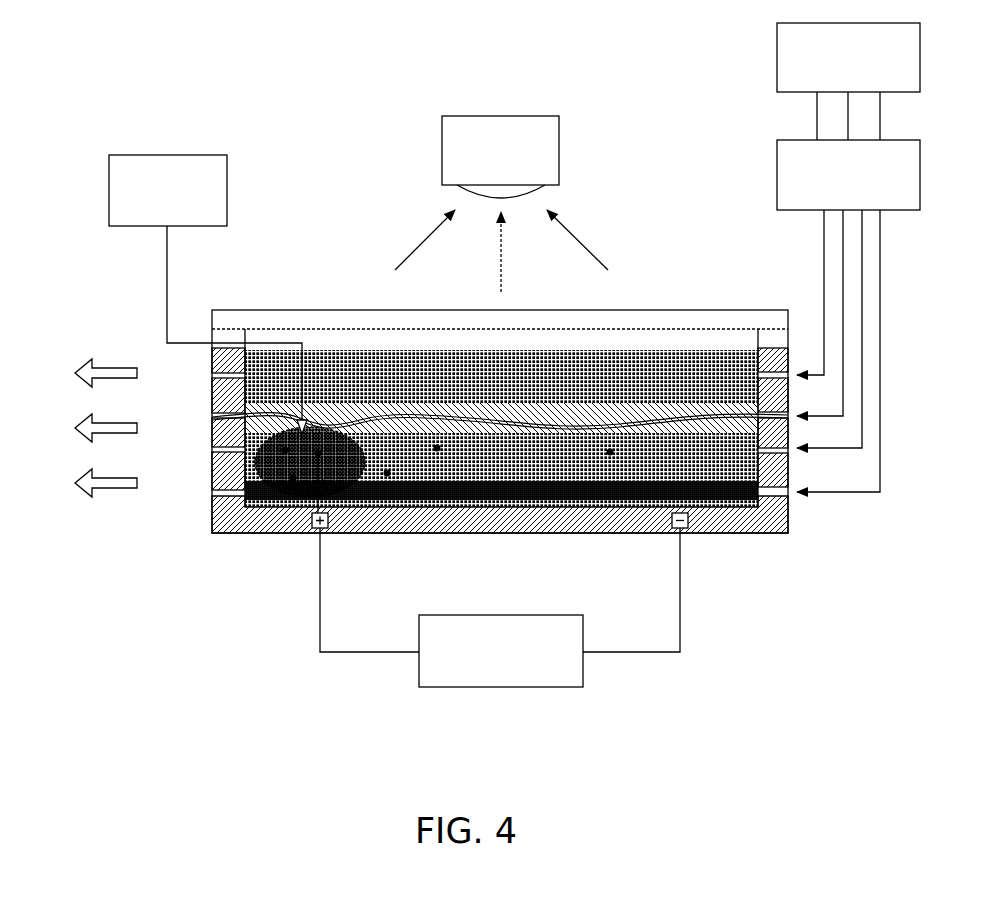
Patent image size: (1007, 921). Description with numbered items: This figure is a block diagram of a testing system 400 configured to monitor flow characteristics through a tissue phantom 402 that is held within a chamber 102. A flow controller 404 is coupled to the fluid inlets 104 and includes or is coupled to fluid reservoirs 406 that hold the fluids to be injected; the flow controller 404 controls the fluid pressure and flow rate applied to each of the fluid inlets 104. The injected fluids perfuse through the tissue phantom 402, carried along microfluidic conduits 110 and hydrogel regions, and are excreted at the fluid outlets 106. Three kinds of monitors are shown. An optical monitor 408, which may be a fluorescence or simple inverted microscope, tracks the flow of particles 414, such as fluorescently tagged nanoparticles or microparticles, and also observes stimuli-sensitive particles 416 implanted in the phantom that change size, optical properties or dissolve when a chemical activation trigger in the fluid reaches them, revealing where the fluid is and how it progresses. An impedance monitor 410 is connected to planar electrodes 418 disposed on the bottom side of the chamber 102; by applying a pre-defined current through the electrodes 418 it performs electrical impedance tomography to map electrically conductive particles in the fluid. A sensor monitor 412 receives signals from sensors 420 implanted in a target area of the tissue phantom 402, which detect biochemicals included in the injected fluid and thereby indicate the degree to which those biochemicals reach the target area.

The testing system 400 is at (128, 68).
The tissue phantom 402 is at (495, 403).
The flow controller 404 is at (777, 175).
The fluid reservoirs 406 is at (777, 57).
The optical monitor 408 is at (500, 116).
The impedance monitor 410 is at (499, 687).
The sensor monitor 412 is at (167, 155).
The particles 414 is at (437, 448).
The stimuli-sensitive particles 416 is at (318, 453).
The planar electrodes 418 is at (332, 522).
The sensors 420 is at (255, 448).
The microfluidic conduits 110 is at (535, 412).
The fluid inlets 104 is at (797, 497).
The fluid outlets 106 is at (208, 492).
The chamber 102 is at (236, 533).